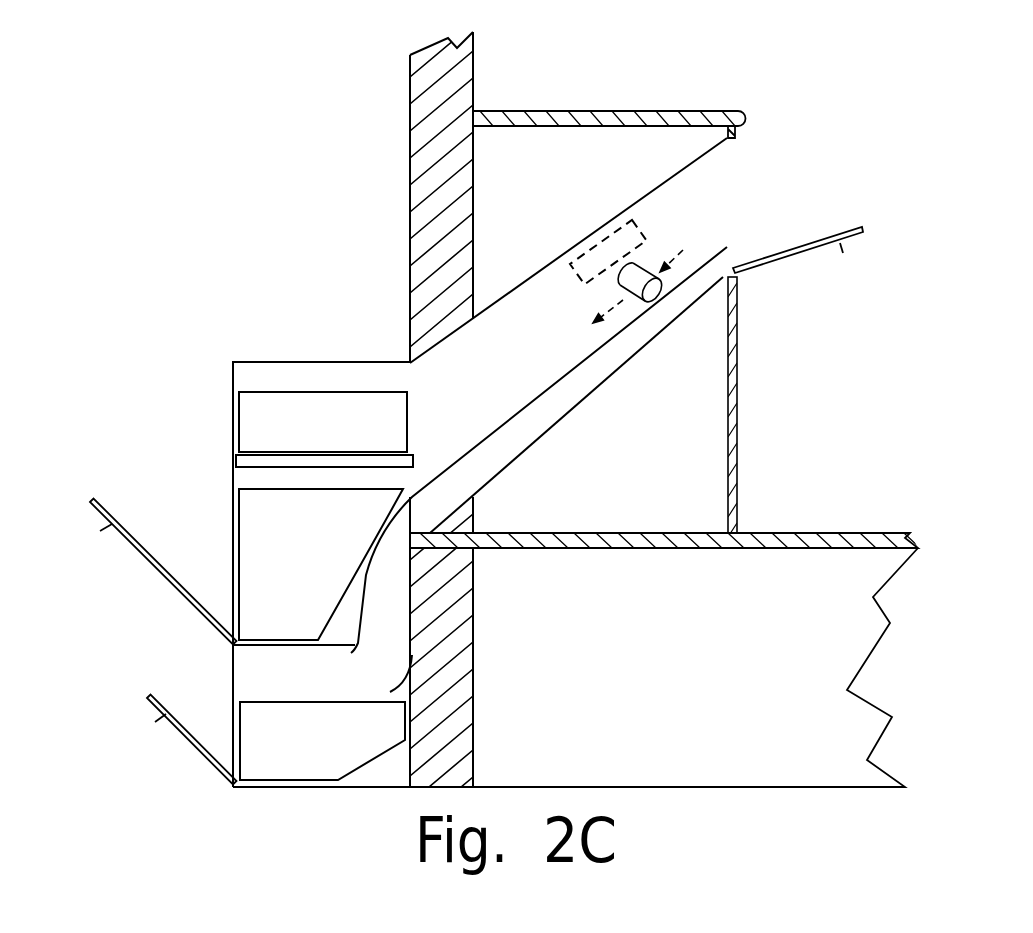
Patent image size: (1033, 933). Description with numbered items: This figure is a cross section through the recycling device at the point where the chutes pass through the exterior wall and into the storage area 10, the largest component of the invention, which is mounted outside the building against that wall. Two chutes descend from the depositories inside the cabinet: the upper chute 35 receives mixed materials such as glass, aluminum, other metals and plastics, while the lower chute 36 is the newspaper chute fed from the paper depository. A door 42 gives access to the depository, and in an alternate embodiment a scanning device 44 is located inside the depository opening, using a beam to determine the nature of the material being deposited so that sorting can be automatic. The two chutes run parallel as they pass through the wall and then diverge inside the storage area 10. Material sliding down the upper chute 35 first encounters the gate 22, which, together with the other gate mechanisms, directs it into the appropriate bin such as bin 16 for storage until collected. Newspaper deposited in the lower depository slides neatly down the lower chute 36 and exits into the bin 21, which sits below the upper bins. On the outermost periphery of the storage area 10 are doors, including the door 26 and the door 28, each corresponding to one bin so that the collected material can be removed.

The storage area 10 is at (323, 362).
The bin 16 is at (275, 540).
The bin 21 is at (306, 753).
The gate 22 is at (280, 420).
The door 26 is at (140, 553).
The door 28 is at (178, 730).
The upper chute 35 is at (693, 213).
The lower chute 36 is at (560, 400).
The door 42 is at (793, 253).
The scanning device 44 is at (605, 262).